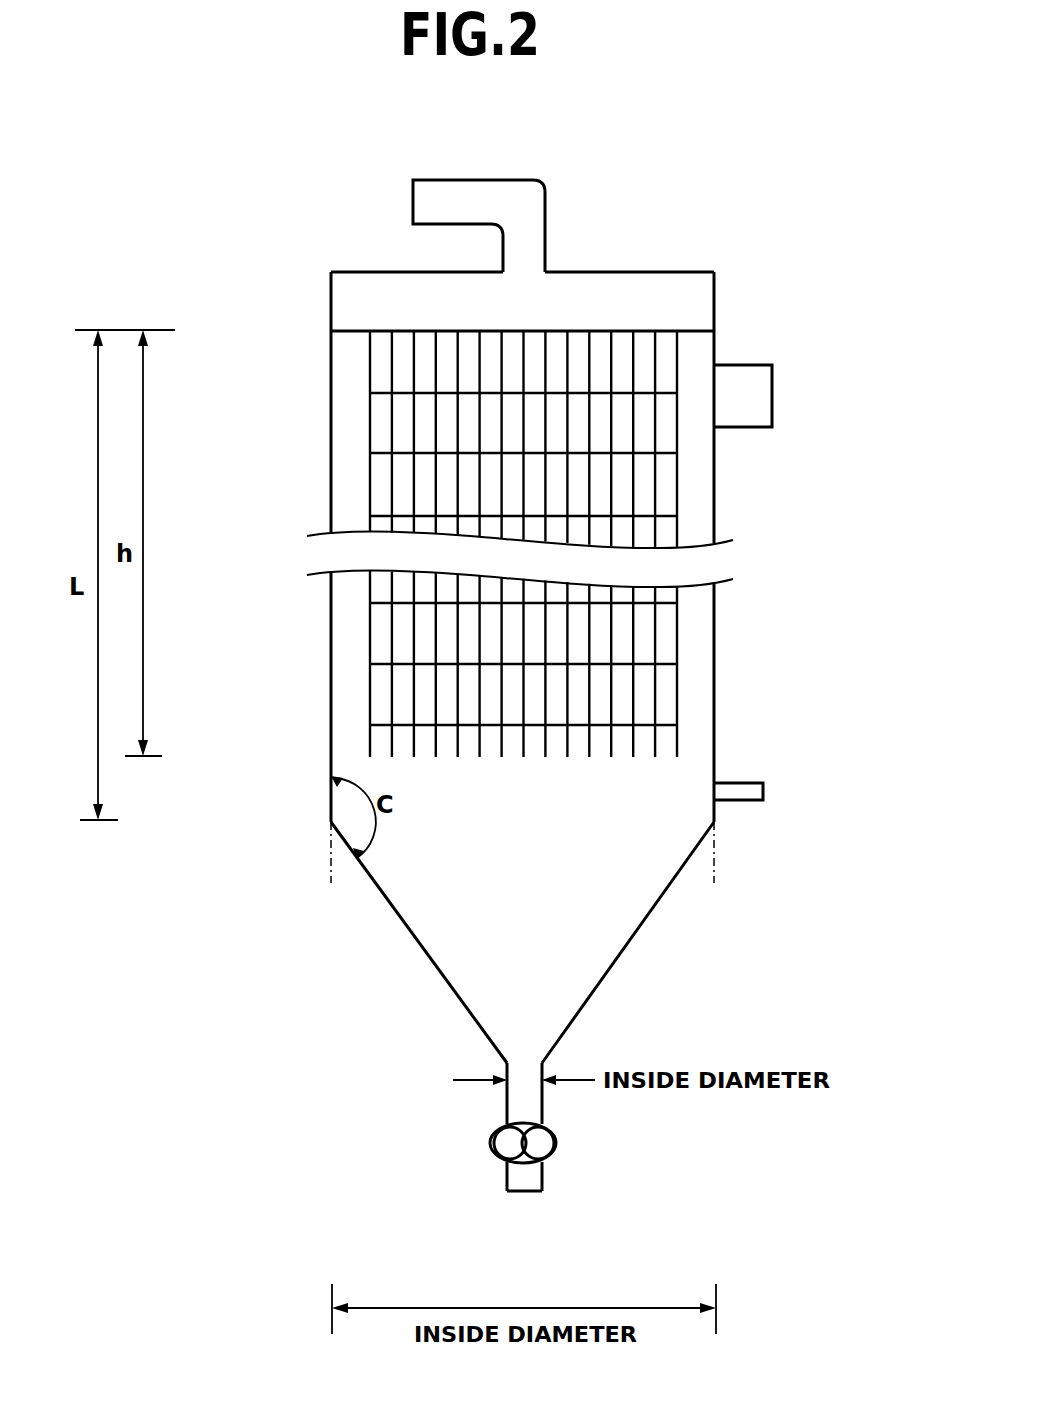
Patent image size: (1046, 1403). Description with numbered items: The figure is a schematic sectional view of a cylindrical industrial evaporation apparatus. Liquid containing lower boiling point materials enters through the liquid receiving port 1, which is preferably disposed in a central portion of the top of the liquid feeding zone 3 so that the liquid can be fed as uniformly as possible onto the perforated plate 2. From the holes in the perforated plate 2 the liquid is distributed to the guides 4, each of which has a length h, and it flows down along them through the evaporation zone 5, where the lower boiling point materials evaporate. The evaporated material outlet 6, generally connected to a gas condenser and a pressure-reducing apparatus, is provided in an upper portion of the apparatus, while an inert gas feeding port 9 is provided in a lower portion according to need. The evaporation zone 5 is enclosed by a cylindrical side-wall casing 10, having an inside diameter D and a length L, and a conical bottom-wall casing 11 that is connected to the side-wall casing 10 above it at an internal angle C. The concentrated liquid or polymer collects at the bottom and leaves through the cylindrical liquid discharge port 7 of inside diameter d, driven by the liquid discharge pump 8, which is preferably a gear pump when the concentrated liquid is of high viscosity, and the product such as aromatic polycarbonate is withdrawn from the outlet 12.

The liquid receiving port 1 is at (413, 203).
The perforated plate 2 is at (343, 328).
The liquid feeding zone 3 is at (703, 302).
The guide 4 is at (678, 647).
The evaporation zone 5 is at (345, 438).
The evaporated material outlet 6 is at (758, 397).
The liquid discharge port 7 is at (530, 1062).
The liquid discharge pump 8 is at (557, 1143).
The inert gas feeding port 9 is at (765, 791).
The side-wall casing of evaporation zone 10 is at (330, 707).
The bottom-wall casing of evaporation zone 11 is at (383, 900).
The outlet 12 is at (525, 1193).